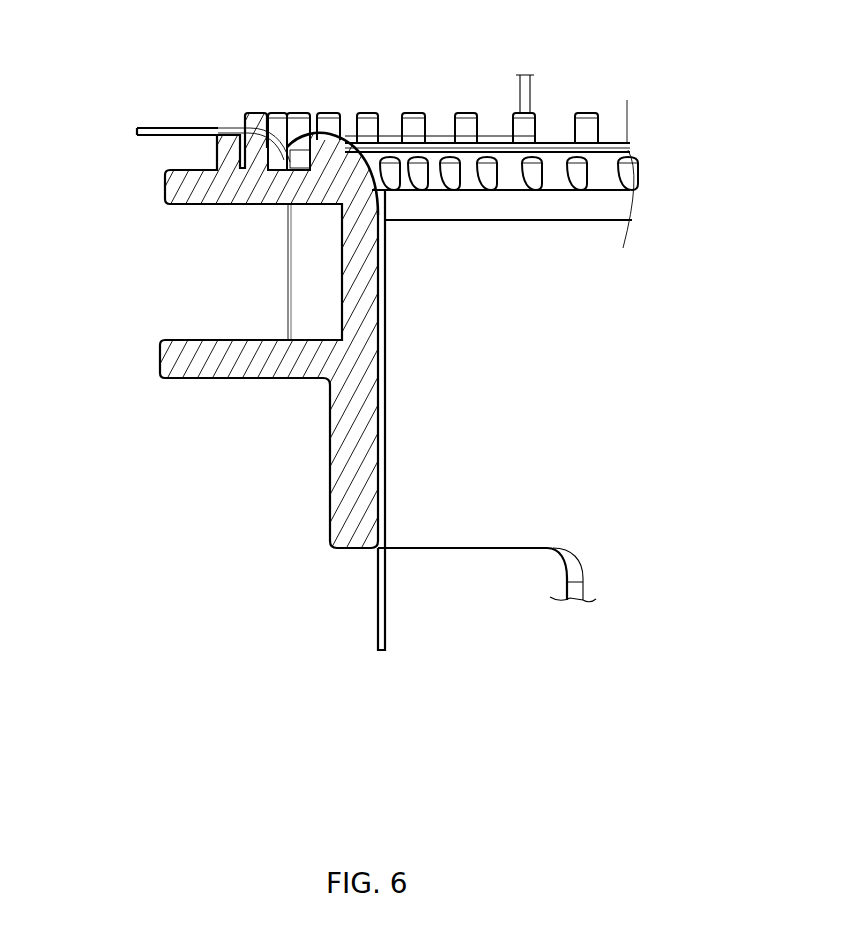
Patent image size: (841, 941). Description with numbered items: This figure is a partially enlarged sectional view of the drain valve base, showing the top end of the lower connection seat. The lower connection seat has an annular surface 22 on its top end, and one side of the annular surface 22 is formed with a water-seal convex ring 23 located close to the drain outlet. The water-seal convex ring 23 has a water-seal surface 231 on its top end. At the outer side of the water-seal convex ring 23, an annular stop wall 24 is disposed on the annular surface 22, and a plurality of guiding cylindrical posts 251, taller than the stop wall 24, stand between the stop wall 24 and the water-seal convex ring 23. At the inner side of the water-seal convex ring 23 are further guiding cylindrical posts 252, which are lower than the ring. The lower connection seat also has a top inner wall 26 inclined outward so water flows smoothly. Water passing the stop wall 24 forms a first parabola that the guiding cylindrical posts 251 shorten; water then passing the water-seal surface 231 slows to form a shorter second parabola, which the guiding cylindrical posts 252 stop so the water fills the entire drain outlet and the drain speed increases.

The annular surface 22 is at (178, 185).
The water-seal convex ring 23 is at (337, 167).
The water-seal surface 231 is at (318, 147).
The annular stop wall 24 is at (223, 148).
The guiding cylindrical posts 251 is at (585, 132).
The guiding cylindrical posts 252 is at (625, 173).
The top inner wall 26 is at (563, 206).